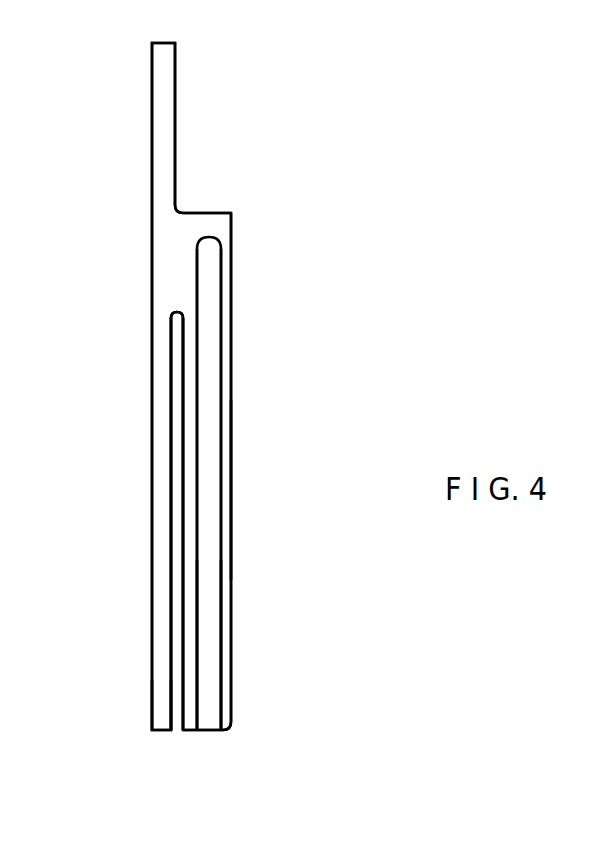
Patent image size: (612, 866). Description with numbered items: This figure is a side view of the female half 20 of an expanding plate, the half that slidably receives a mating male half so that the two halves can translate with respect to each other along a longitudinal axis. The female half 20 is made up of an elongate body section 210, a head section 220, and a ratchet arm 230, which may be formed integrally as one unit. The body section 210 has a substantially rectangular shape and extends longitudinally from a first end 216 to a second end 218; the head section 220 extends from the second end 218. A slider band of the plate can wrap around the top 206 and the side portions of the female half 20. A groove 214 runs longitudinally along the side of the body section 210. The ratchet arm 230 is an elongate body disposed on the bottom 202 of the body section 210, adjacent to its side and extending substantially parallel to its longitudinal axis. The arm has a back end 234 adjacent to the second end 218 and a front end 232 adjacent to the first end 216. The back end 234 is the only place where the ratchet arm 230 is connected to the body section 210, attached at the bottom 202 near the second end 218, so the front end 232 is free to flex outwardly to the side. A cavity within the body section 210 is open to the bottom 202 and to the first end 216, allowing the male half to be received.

The female base half 20 is at (284, 92).
The head section 220 is at (140, 103).
The second end 218 is at (205, 213).
The back end 234 is at (158, 340).
The bottom 202 is at (183, 415).
The top 206 is at (232, 390).
The body section 210 is at (240, 491).
The ratchet arm 230 is at (160, 524).
The groove 214 is at (210, 647).
The front end 232 is at (163, 710).
The first end 216 is at (193, 730).